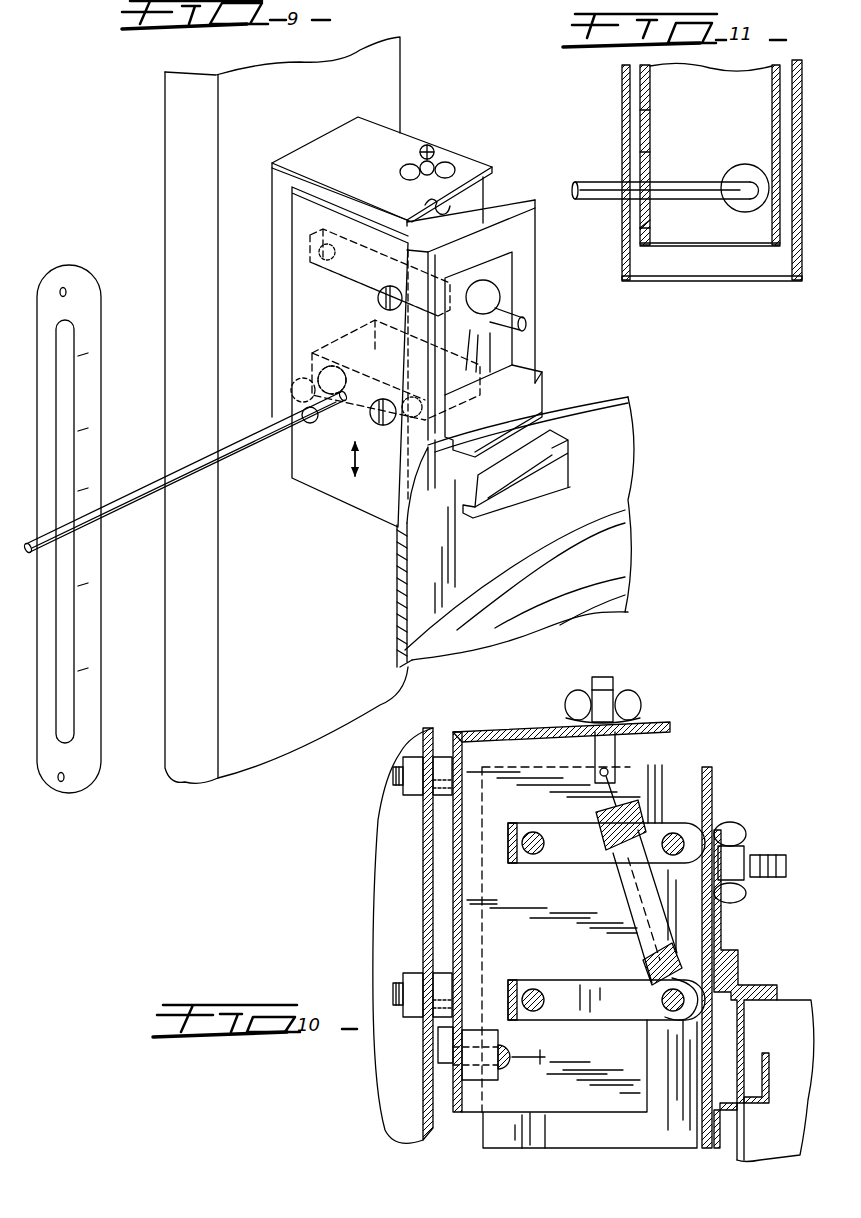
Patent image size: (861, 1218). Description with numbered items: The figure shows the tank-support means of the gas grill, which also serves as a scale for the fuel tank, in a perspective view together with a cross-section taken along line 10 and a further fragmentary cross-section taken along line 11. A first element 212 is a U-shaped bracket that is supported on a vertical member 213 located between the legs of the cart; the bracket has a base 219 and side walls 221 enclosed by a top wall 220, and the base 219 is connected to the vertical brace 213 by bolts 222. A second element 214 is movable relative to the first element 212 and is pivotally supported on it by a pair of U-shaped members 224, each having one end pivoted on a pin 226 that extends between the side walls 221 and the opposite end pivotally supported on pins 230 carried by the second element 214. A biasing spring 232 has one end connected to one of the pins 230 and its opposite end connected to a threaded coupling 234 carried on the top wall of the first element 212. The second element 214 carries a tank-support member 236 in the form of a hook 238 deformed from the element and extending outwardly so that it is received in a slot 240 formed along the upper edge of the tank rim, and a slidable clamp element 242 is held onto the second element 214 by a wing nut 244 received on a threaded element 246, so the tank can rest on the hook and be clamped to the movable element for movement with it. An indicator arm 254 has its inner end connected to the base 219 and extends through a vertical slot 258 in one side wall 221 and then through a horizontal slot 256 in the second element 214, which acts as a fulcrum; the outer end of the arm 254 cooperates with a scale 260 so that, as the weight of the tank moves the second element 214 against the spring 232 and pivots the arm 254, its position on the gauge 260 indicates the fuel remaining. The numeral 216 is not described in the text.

In FIG. 9, the section line 10— 10 is at (310, 103).
In FIG. 10, the section line 11— 11 is at (472, 937).
In FIG. 9, the first element 212 is at (393, 128).
In FIG. 11, the first element 212 is at (680, 94).
In FIG. 9, the vertical member 213 is at (358, 66).
In FIG. 9, the second element 214 is at (512, 193).
In FIG. 10, the second element 214 is at (712, 790).
In FIG. 10, the wall panel 216 is at (430, 865).
In FIG. 11, the base 219 is at (740, 238).
In FIG. 10, the base 219 is at (452, 828).
In FIG. 10, the top wall 220 is at (497, 730).
In FIG. 9, the side walls 221 is at (480, 185).
In FIG. 11, the side walls 221 is at (640, 111).
In FIG. 10, the bolts 222 is at (403, 775).
In FIG. 10, the U-shaped members 224 is at (600, 1005).
In FIG. 10, the pin 226 is at (535, 1012).
In FIG. 10, the pins 230 is at (672, 838).
In FIG. 10, the biasing spring 232 is at (670, 955).
In FIG. 9, the threaded coupling 234 is at (432, 150).
In FIG. 10, the threaded coupling 234 is at (612, 678).
In FIG. 10, the tank-support member 236 is at (738, 1162).
In FIG. 10, the hook 238 is at (766, 1070).
In FIG. 9, the slot 240 is at (555, 475).
In FIG. 10, the slidable clamp element 242 is at (729, 985).
In FIG. 10, the wing nut 244 is at (733, 835).
In FIG. 10, the threaded element 246 is at (775, 856).
In FIG. 9, the indicator arm 254 is at (139, 493).
In FIG. 9, the horizontal slot 256 is at (297, 407).
In FIG. 11, the vertical slot 258 is at (651, 224).
In FIG. 9, the scale 260 is at (83, 628).